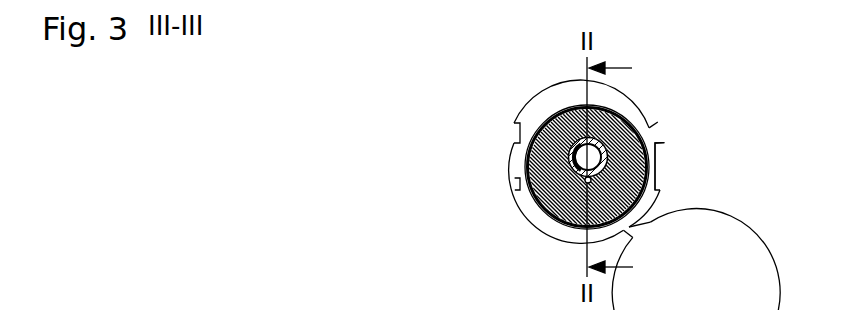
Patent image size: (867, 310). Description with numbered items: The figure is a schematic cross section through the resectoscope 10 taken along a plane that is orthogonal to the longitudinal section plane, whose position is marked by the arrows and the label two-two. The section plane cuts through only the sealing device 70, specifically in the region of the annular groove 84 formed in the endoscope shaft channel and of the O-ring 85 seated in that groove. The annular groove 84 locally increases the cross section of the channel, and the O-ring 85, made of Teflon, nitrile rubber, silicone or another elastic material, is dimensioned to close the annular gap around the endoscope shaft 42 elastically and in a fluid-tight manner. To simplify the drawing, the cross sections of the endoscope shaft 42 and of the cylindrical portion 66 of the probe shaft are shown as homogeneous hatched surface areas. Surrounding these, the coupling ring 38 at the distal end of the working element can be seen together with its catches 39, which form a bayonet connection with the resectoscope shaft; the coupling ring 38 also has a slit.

The resectoscope 10 is at (674, 61).
The coupling ring 38 is at (657, 114).
The catches 39 is at (661, 143).
The endoscope shaft 42 is at (562, 138).
The cylindrical portion 66 is at (588, 182).
The sealing device 70 is at (567, 116).
The annular groove 84 is at (571, 150).
The O-ring 85 is at (573, 158).